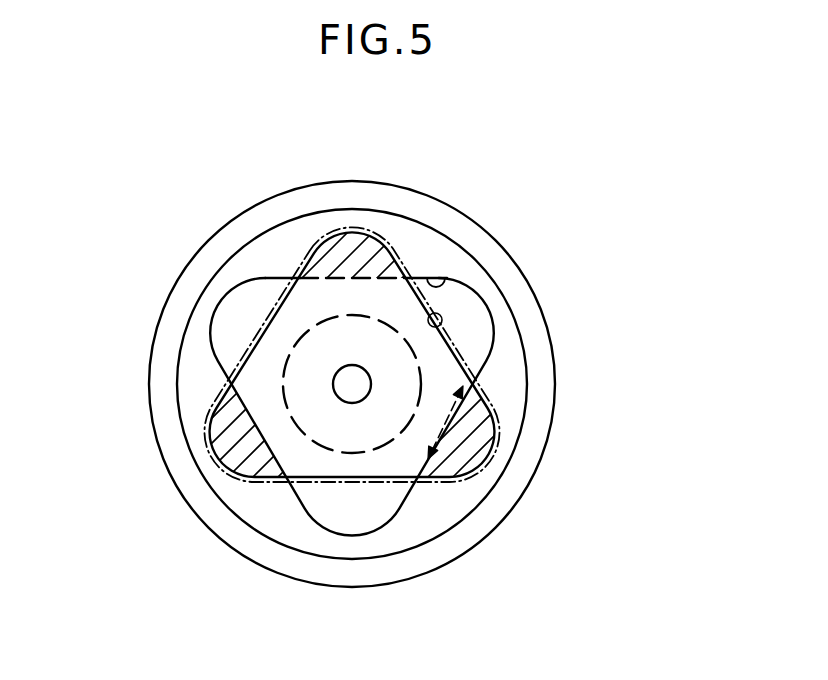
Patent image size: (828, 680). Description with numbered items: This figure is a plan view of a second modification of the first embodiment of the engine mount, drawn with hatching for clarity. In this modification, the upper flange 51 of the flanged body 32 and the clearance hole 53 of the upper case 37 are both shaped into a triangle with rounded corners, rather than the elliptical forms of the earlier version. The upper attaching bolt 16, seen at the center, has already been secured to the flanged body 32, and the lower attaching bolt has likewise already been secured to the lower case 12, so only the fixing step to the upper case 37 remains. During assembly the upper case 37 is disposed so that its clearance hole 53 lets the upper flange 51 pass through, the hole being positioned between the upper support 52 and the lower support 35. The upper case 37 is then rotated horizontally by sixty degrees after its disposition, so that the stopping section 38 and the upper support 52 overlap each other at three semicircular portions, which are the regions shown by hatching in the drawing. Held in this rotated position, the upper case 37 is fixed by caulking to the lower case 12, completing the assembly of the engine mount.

The lower case 12 is at (453, 550).
The upper attaching bolt 16 is at (357, 393).
The flanged body 32 is at (393, 315).
The lower support 35 is at (227, 307).
The upper case 37 is at (503, 282).
The stopping section 38 is at (510, 333).
The upper flange 51 is at (517, 500).
The upper support 52 is at (465, 432).
The clearance hole 53 is at (445, 330).